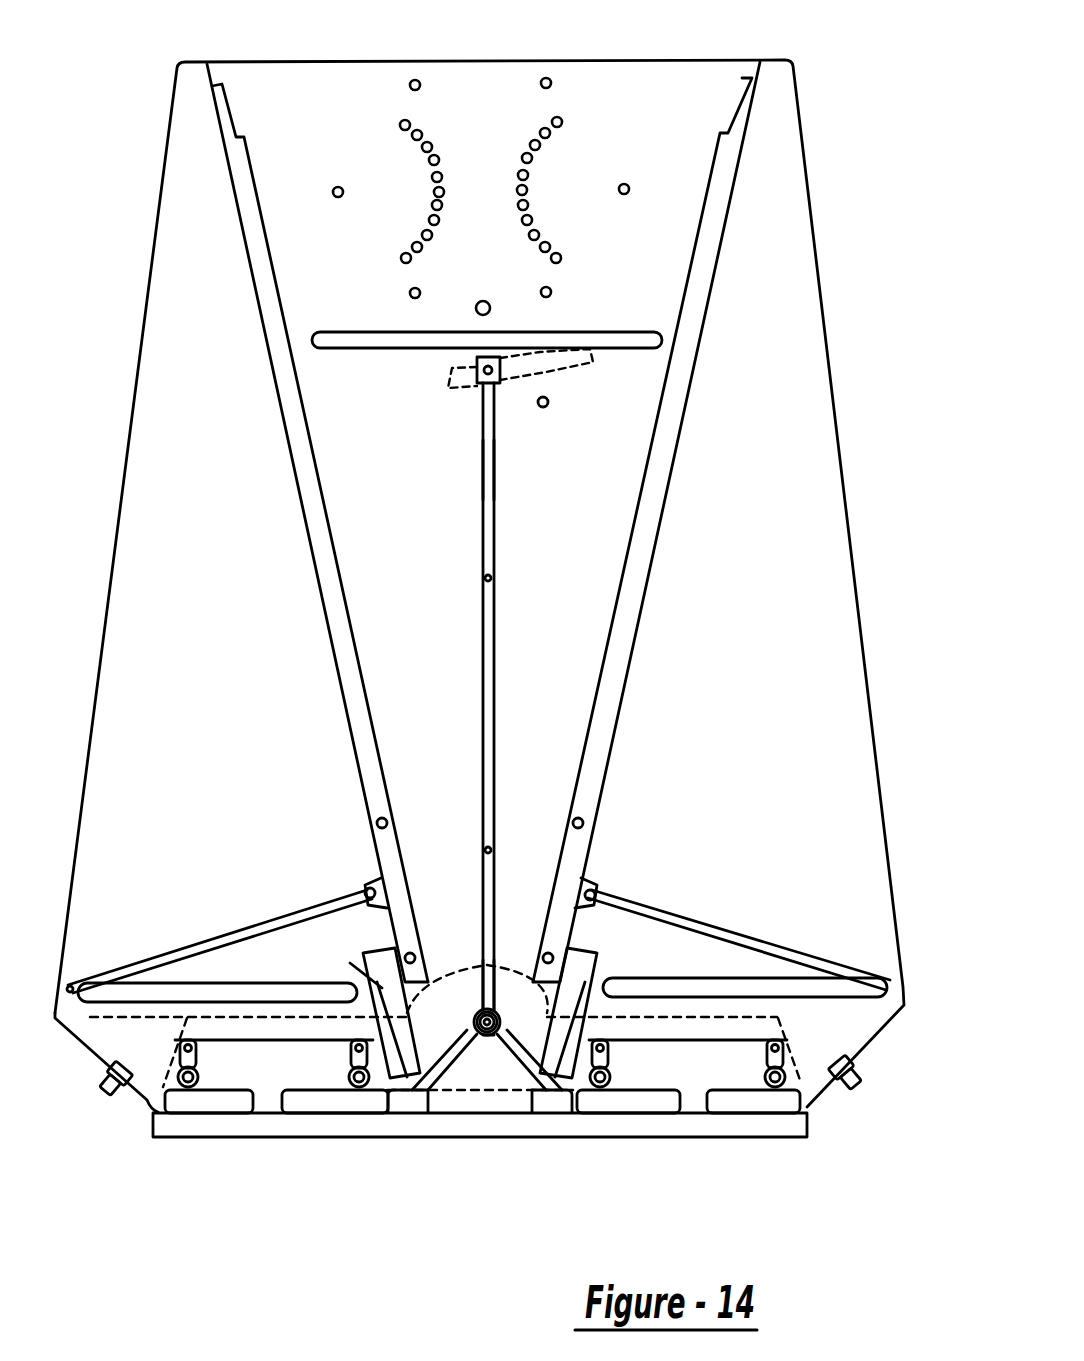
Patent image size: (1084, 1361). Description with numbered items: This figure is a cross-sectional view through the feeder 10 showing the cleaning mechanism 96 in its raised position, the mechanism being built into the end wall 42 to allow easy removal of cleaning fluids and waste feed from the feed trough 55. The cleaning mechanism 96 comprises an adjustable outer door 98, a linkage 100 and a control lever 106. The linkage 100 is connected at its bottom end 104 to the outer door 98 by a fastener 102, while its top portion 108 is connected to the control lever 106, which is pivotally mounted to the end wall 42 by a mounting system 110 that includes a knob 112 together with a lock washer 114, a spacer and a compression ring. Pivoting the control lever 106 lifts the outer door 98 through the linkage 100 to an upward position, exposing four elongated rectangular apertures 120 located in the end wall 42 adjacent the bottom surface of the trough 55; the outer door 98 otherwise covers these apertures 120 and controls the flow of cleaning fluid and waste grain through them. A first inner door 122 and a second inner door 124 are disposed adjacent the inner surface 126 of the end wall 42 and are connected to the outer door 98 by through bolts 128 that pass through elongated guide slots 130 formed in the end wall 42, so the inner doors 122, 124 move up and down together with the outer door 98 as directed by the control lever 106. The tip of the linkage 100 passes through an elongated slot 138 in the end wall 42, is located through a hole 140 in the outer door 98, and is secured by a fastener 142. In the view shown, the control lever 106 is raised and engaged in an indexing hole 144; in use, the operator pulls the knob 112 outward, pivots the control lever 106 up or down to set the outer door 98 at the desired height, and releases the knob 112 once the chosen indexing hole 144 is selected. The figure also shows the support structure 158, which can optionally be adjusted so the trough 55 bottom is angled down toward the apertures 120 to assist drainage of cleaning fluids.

The feeder 10 is at (728, 28).
The end wall 42 is at (863, 626).
The feed trough 55 is at (183, 975).
The cleaning mechanism 96 is at (450, 957).
The outer door 98 is at (188, 1027).
The linkage 100 is at (493, 662).
The fastener 102 is at (475, 1040).
The bottom end 104 is at (493, 950).
The control lever 106 is at (517, 378).
The top portion 108 is at (482, 463).
The mounting system 110 is at (458, 388).
The knob 112 is at (562, 347).
The lock washer 114 is at (557, 355).
The apertures 120 is at (207, 1107).
The first inner door 122 is at (143, 1100).
The second inner door 124 is at (267, 1057).
The inner surface 126 is at (842, 712).
The through bolts 128 is at (220, 1057).
The elongated guide slots 130 is at (355, 1040).
The elongated slot 138 is at (413, 1001).
The hole 140 is at (500, 1032).
The fastener 142 is at (487, 1040).
The indexing hole 144 is at (549, 402).
The support structure 158 is at (800, 1123).